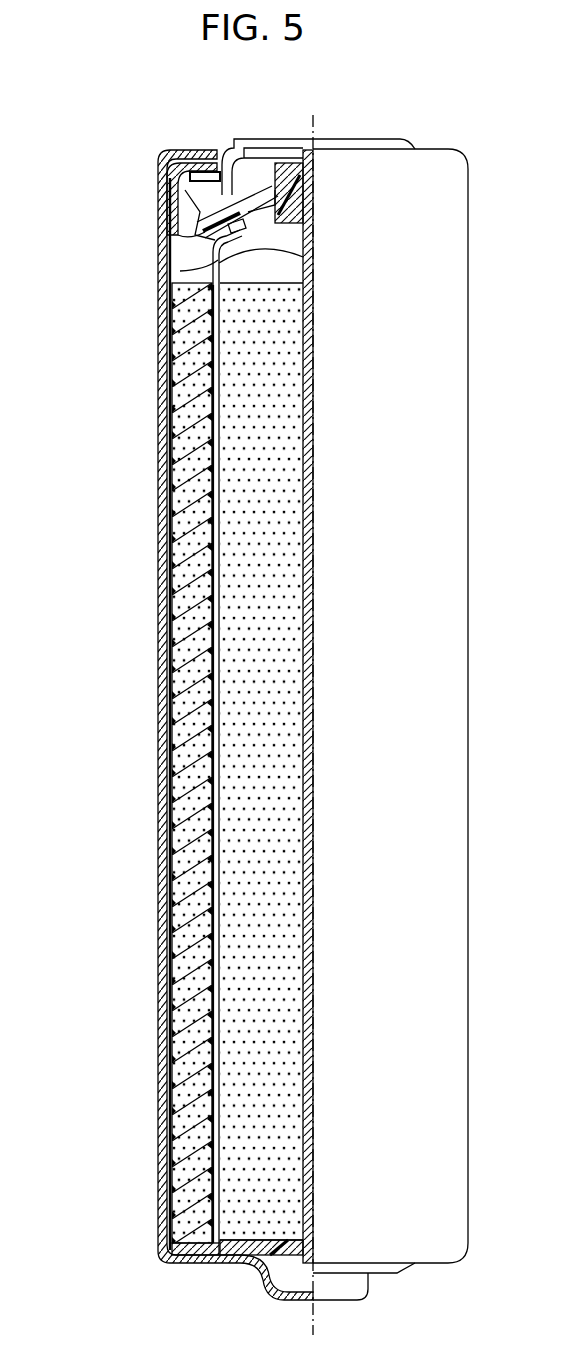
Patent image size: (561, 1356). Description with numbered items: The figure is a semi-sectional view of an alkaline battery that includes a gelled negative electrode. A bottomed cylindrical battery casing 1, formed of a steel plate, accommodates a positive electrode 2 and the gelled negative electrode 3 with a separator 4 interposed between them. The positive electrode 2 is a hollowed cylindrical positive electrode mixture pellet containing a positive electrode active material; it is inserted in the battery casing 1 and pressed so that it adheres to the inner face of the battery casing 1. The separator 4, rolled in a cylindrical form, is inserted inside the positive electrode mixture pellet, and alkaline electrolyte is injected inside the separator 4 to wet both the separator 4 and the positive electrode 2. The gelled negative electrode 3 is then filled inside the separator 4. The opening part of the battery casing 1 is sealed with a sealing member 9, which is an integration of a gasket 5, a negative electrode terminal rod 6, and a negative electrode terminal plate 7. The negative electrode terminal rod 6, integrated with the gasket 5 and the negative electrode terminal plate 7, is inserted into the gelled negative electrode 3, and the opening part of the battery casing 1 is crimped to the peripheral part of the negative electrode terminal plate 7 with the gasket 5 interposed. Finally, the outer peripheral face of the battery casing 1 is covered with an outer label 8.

The battery casing 1 is at (163, 658).
The positive electrode 2 is at (188, 968).
The gelled negative electrode 3 is at (228, 552).
The separator 4 is at (215, 757).
The gasket 5 is at (175, 222).
The negative electrode terminal rod 6 is at (180, 271).
The negative electrode terminal plate 7 is at (262, 142).
The outer label 8 is at (160, 1058).
The sealing member 9 is at (97, 80).